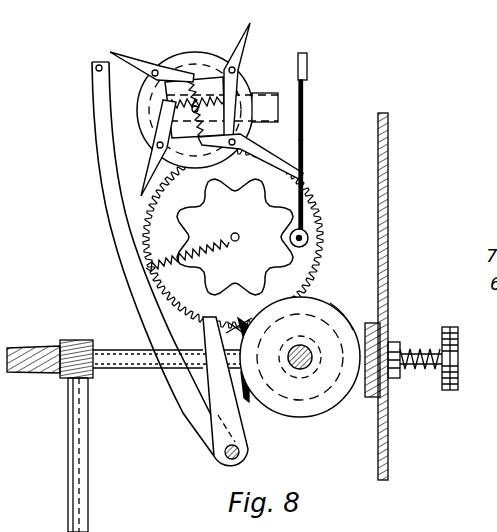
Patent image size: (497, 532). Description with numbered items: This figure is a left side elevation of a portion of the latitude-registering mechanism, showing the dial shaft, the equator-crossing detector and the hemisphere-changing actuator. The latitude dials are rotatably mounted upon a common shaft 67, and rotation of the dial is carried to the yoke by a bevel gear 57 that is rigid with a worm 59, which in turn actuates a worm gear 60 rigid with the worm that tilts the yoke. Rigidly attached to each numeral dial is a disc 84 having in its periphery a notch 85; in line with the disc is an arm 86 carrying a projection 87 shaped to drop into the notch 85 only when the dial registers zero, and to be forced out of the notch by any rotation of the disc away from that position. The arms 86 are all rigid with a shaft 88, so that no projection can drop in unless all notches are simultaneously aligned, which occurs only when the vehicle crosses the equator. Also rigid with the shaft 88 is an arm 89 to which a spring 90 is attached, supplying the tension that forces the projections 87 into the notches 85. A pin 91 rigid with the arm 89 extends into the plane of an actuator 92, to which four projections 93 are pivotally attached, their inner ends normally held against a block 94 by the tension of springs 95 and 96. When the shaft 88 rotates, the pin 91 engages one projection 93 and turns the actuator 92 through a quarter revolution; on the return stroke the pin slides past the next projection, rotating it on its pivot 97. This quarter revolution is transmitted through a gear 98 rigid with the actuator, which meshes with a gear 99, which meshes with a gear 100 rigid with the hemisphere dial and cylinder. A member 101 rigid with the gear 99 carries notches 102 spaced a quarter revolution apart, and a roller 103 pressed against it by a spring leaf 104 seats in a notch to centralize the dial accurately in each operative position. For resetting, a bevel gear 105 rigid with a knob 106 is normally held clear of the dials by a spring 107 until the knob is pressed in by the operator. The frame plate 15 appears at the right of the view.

The frame plate 15 is at (388, 170).
The bevel gear 57 is at (247, 413).
The worm 59 is at (98, 373).
The worm gear 60 is at (25, 348).
The common shaft 67 is at (303, 346).
The disc 84 is at (322, 307).
The notch 85 is at (259, 337).
The arm 86 is at (205, 336).
The projection 87 is at (228, 320).
The shaft 88 is at (240, 461).
The arm 89 is at (113, 243).
The spring 90 is at (231, 237).
The pin 91 is at (96, 68).
The actuator 92 is at (245, 78).
The projections 93 is at (124, 67).
The block 94 is at (165, 80).
The spring 95 is at (196, 60).
The spring 96 is at (177, 100).
The pivot 97 is at (157, 68).
The gear 98 is at (155, 132).
The gear 99 is at (320, 212).
The gear 100 is at (331, 312).
The member 101 is at (205, 184).
The notches 102 is at (277, 197).
The roller 103 is at (308, 240).
The spring leaf 104 is at (306, 135).
The bevel gear 105 is at (369, 397).
The knob 106 is at (452, 384).
The spring 107 is at (403, 350).